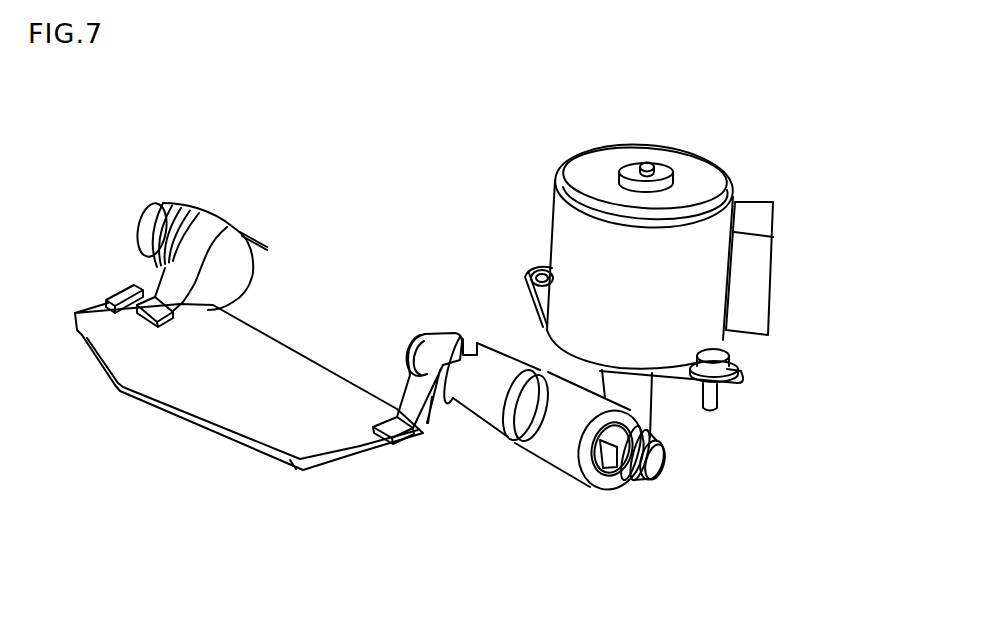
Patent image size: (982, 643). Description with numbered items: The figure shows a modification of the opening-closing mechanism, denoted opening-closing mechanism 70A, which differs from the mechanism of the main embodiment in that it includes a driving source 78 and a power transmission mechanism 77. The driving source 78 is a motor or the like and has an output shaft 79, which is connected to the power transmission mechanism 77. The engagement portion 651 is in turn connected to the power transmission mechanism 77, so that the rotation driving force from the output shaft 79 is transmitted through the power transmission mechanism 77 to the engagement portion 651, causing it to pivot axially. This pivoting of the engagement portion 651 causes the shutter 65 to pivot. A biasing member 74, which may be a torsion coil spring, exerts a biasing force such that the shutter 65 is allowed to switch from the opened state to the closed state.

The shutter 65 is at (233, 450).
The biasing member 74 is at (198, 208).
The engagement portion 651 is at (160, 210).
The power transmission mechanism 77 is at (571, 509).
The driving source 78 is at (608, 160).
The output shaft 79 is at (652, 427).
The opening-closing mechanism 70A is at (465, 206).